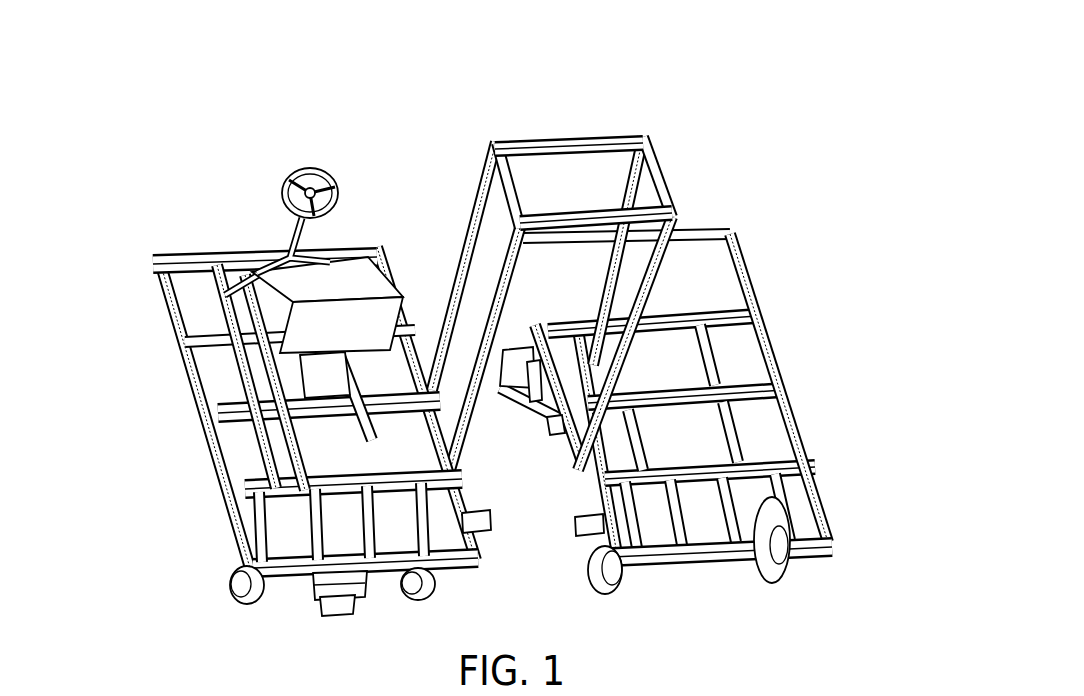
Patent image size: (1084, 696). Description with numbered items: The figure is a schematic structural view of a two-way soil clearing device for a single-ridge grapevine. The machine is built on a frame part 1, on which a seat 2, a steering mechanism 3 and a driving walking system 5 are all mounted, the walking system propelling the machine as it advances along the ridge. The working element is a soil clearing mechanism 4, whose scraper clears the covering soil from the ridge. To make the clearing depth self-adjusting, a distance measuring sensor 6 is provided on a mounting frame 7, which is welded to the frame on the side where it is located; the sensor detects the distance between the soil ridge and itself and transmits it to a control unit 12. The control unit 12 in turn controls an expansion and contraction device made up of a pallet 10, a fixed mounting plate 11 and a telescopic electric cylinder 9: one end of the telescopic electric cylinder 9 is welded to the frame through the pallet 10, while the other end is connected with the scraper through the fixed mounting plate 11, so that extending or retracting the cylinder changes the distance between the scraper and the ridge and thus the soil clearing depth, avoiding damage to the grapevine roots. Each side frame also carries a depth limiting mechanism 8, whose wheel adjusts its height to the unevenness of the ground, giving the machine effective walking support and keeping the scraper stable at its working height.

The frame part 1 is at (232, 257).
The seat 2 is at (205, 262).
The steering mechanism 3 is at (309, 188).
The soil clearing mechanism 4 is at (495, 305).
The driving walking system 5 is at (307, 497).
The distance measuring sensor 6 is at (540, 385).
The mounting frame 7 is at (535, 330).
The depth limiting mechanism 8 is at (787, 457).
The telescopic electric cylinder 9 is at (605, 320).
The pallet 10 is at (662, 292).
The fixed mounting plate 11 is at (515, 365).
The control unit 12 is at (353, 447).